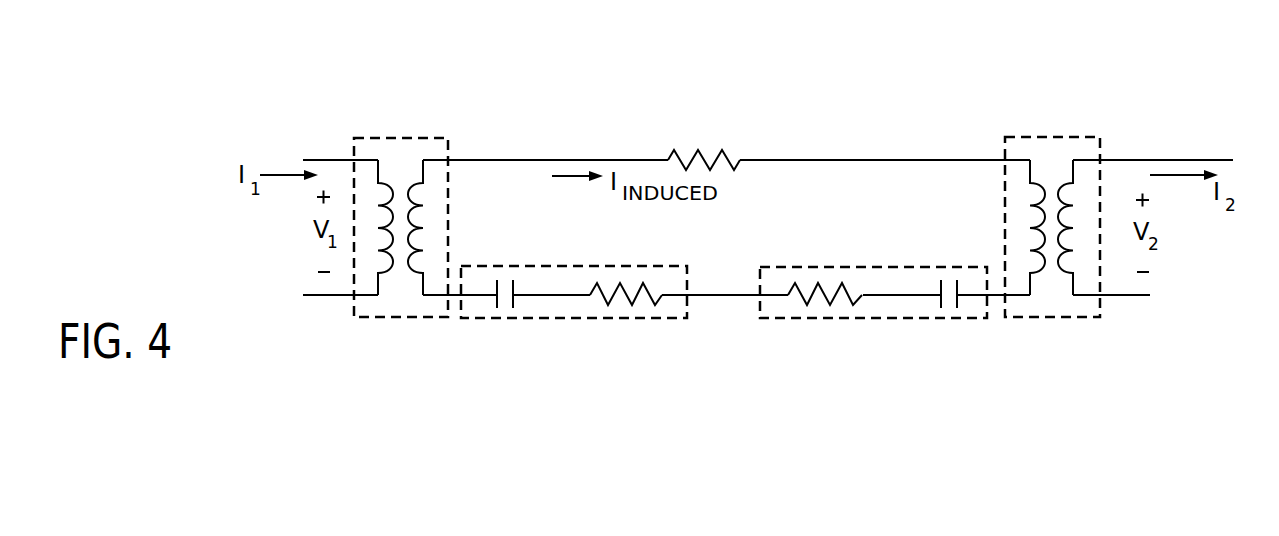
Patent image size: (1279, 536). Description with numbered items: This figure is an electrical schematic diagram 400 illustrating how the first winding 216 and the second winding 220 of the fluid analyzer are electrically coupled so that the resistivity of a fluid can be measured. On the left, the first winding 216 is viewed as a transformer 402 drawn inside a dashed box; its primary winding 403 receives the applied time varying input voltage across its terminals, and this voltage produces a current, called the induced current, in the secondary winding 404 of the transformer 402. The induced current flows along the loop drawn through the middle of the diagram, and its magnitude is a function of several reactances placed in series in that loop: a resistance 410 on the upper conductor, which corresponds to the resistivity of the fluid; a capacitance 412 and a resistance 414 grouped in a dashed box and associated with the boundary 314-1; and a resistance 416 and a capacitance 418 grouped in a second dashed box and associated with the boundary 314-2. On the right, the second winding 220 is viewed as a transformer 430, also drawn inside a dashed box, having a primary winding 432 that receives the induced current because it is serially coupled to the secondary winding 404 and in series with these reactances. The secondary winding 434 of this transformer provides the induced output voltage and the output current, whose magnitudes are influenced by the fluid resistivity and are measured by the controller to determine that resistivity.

The electrical schematic diagram 400 is at (1100, 57).
The first winding 216 is at (402, 138).
The transformer 402 is at (353, 305).
The primary winding 403 is at (392, 262).
The secondary winding 404 is at (416, 263).
The resistance 410 is at (673, 150).
The boundary 314-1 is at (575, 318).
The capacitance 412 is at (513, 298).
The resistance 414 is at (607, 290).
The boundary 314-2 is at (788, 318).
The resistance 416 is at (809, 290).
The capacitance 418 is at (957, 298).
The second winding 220 is at (1053, 137).
The primary winding 432 is at (1042, 195).
The secondary winding 434 is at (1063, 193).
The transformer 430 is at (1052, 317).